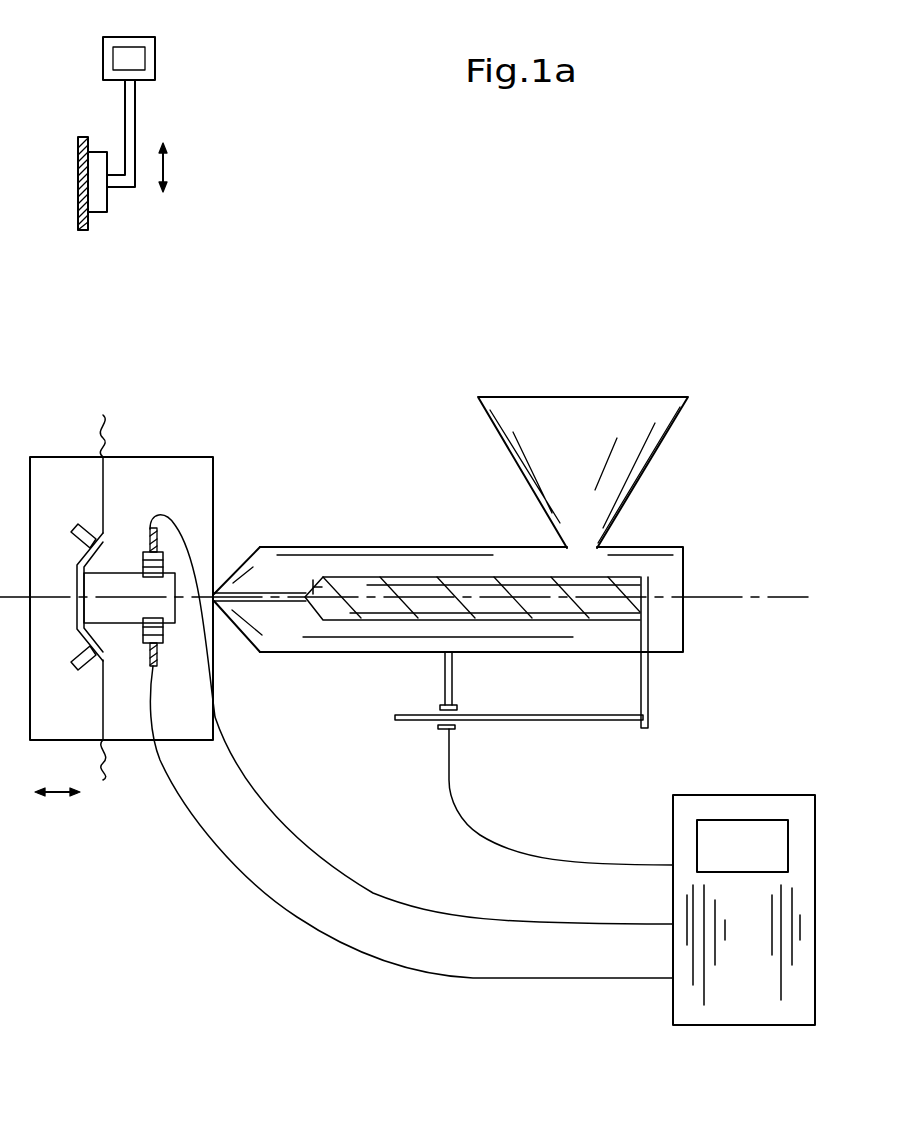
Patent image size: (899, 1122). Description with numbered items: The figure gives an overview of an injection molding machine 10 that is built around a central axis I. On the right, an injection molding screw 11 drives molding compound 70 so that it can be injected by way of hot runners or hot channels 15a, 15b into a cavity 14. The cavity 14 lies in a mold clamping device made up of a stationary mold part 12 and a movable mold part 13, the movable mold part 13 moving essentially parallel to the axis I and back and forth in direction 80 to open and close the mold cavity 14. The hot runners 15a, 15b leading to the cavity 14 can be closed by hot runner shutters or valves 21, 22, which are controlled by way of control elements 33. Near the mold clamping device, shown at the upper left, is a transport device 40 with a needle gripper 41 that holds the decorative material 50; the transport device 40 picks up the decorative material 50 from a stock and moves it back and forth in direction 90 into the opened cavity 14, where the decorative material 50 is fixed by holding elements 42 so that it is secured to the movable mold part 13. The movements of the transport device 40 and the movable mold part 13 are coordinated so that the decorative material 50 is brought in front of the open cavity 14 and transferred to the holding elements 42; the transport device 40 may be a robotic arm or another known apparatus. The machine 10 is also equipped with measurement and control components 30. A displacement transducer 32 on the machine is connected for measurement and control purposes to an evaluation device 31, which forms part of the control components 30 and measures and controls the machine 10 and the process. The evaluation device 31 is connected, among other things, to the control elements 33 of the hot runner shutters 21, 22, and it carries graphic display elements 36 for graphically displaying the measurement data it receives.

The injection molding machine 10 is at (211, 944).
The injection molding screw 11 is at (420, 562).
The stationary mold part 12 is at (162, 478).
The movable mold part 13 is at (92, 473).
The cavity 14 is at (76, 567).
The hot runner 15a is at (112, 573).
The hot runner 15b is at (115, 630).
The hot runner shutter 21 is at (163, 560).
The hot runner shutter 22 is at (162, 648).
The measurement and control components 30 is at (633, 1085).
The evaluation device 31 is at (798, 983).
The displacement transducer 32 is at (457, 727).
The control elements 33 is at (160, 551).
The graphic display elements 36 is at (757, 830).
The transport device 40 is at (234, 168).
The needle gripper 41 is at (88, 225).
The holding elements 42 is at (80, 531).
The decorative material 50 is at (78, 145).
The molding compound 70 is at (315, 590).
The direction 80 is at (56, 797).
The direction 90 is at (168, 172).
The central axis I is at (766, 597).